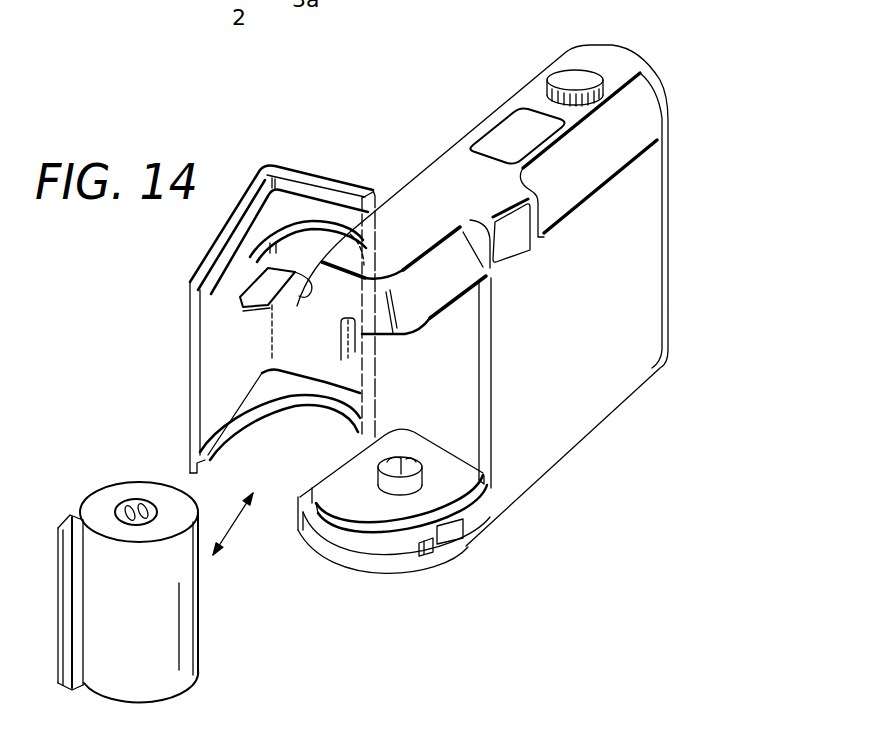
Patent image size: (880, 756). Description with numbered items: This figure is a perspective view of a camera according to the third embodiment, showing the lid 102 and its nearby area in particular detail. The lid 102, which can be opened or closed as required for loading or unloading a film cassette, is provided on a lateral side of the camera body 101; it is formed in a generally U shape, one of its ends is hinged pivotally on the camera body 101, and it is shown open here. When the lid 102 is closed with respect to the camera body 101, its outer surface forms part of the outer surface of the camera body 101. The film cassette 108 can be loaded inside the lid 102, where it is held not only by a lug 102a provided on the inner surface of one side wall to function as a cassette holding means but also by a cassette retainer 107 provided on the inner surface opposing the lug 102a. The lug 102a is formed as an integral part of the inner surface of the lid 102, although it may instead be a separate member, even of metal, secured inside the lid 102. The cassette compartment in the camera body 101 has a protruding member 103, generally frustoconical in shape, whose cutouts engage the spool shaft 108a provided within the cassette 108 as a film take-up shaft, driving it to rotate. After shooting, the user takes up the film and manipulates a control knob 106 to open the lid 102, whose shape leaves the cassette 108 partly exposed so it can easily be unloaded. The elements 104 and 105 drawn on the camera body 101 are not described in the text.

The camera body 101 is at (622, 67).
The lid 102 is at (312, 174).
The lug 102a is at (250, 302).
The protruding member 103 is at (427, 470).
The release button 104 is at (567, 72).
The window 105 is at (500, 119).
The control knob 106 is at (458, 543).
The cassette retainer 107 is at (340, 350).
The film cassette 108 is at (200, 638).
The spool shaft 108a is at (140, 496).